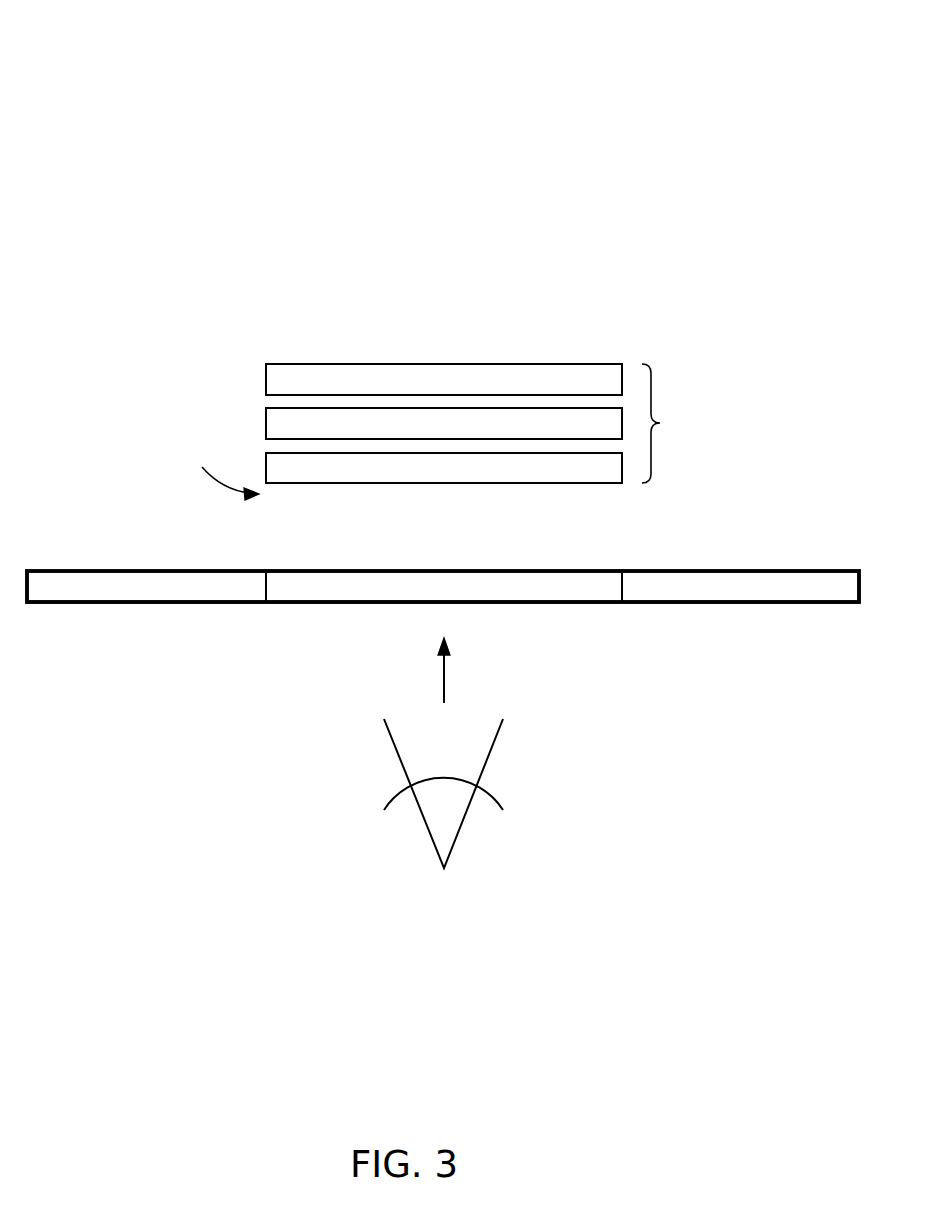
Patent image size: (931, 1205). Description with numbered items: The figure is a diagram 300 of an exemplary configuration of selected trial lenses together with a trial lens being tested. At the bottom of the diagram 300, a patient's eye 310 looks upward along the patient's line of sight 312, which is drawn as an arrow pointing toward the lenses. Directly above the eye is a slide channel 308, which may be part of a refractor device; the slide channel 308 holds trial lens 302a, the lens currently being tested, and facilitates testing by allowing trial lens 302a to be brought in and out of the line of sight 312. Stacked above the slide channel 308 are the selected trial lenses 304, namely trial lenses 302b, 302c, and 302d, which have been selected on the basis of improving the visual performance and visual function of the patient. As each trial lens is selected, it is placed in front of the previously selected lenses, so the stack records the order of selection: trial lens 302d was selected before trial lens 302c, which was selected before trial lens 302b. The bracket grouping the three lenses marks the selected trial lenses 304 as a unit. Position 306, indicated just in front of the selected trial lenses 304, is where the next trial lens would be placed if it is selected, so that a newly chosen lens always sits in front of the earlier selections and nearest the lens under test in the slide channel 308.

The diagram 300 is at (123, 36).
The trial lens 302a is at (460, 594).
The trial lens 302b is at (460, 474).
The trial lens 302c is at (460, 430).
The trial lens 302d is at (460, 386).
The selected trial lenses 304 is at (672, 418).
The position 306 is at (223, 472).
The slide channel 308 is at (752, 563).
The patient's eye 310 is at (526, 800).
The line of sight 312 is at (462, 672).